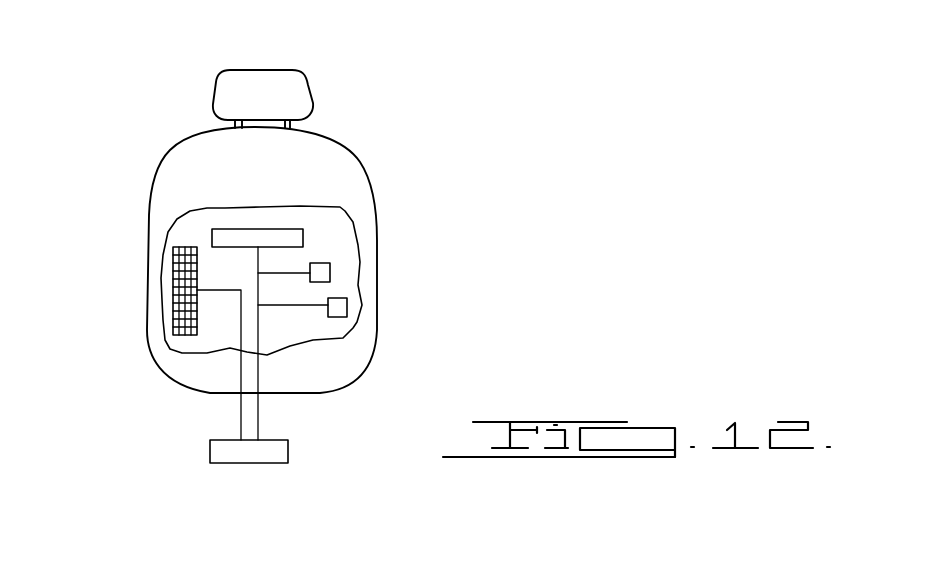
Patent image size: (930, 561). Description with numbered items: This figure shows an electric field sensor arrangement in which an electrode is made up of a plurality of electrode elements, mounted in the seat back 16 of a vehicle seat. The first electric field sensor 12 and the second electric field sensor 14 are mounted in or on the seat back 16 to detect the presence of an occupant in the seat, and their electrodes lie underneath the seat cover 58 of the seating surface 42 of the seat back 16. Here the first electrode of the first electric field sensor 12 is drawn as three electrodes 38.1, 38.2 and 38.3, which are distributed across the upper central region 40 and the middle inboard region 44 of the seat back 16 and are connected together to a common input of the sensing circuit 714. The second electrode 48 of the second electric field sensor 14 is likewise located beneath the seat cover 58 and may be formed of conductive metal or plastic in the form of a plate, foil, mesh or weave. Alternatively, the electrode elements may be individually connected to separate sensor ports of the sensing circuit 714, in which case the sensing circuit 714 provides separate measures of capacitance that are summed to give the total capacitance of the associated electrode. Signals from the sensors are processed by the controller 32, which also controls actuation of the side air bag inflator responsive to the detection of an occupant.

The first electric field sensor 12 is at (402, 235).
The second electric field sensor 14 is at (136, 210).
The seat back 16 is at (362, 162).
The controller 32 is at (288, 450).
The electrode 38.1 is at (340, 207).
The electrode 38.2 is at (325, 280).
The electrode 38.3 is at (347, 312).
The upper central region 40 is at (278, 221).
The seating surface 42 is at (237, 179).
The middle inboard region 44 is at (392, 256).
The second electrode 48 is at (175, 292).
The seat cover 58 is at (317, 378).
The sensing circuit 714 is at (196, 458).